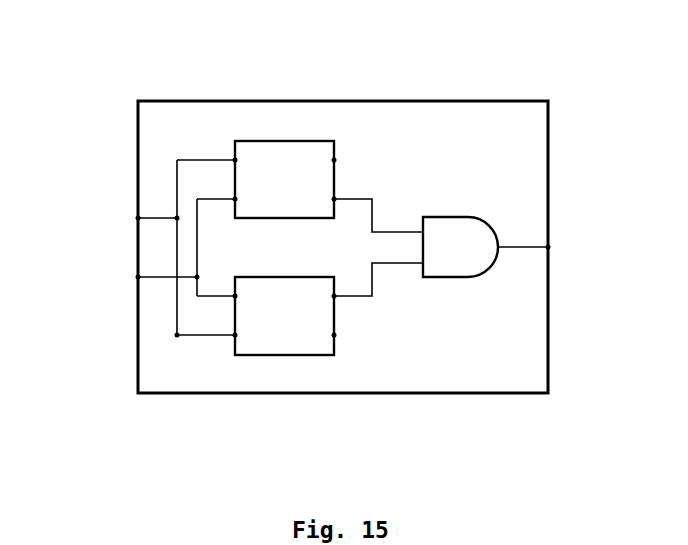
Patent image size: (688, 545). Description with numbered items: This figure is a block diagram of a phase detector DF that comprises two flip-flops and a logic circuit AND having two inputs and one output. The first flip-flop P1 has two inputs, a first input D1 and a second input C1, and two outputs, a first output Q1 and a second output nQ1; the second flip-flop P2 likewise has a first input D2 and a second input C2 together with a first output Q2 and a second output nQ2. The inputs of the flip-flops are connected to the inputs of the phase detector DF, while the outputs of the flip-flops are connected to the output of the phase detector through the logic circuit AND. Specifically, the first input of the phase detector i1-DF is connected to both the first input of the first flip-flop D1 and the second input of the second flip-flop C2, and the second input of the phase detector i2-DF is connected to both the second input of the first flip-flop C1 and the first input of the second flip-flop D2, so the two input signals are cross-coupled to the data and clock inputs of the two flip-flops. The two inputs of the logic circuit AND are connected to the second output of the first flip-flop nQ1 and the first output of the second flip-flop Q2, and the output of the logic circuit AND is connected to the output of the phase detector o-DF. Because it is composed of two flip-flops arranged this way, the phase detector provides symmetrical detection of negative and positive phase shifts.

The phase detector DF is at (270, 101).
The first flip-flop P1 is at (286, 141).
The second flip-flop P2 is at (286, 355).
The first input of the first flip-flop D1 is at (235, 160).
The second input of the first flip-flop C1 is at (235, 199).
The first output of the first flip-flop Q1 is at (334, 160).
The second output of the first flip-flop nQ1 is at (334, 199).
The first input of the second flip-flop D2 is at (177, 335).
The second input of the second flip-flop C2 is at (235, 335).
The first output of the second flip-flop Q2 is at (334, 296).
The second output of the second flip-flop nQ2 is at (334, 335).
The first input of the phase detector i1-DF is at (138, 218).
The second input of the phase detector i2-DF is at (138, 277).
The output of the phase detector o-DF is at (548, 247).
The logic circuit AND is at (453, 279).